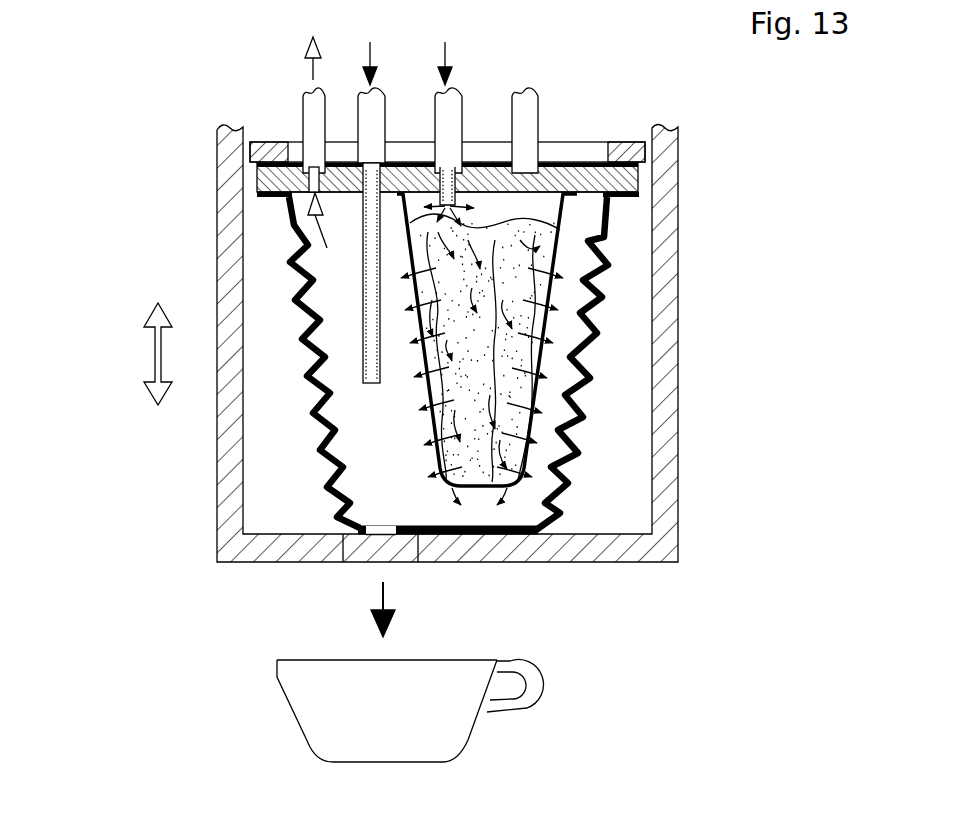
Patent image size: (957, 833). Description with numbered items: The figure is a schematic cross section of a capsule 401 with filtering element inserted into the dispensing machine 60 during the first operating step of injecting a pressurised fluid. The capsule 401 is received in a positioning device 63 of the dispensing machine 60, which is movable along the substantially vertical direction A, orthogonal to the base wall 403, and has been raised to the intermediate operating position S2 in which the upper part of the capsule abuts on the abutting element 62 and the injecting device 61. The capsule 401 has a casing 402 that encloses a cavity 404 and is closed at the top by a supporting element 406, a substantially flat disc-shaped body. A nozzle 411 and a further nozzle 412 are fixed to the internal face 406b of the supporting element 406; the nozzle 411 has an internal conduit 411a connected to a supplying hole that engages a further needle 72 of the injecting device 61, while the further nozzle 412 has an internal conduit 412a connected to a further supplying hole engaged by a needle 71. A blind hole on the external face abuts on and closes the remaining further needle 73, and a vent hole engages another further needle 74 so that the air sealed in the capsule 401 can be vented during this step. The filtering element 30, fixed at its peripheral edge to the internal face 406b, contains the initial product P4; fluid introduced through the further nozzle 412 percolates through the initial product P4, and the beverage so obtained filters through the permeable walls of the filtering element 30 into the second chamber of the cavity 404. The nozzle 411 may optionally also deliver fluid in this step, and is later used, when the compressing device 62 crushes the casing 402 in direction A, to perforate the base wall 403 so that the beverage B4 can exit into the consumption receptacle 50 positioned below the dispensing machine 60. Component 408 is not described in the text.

The capsule 401 is at (186, 78).
The another further needle 74 is at (313, 118).
The further needle 72 is at (373, 125).
The needle 71 is at (450, 127).
The remaining further needle 73 is at (523, 128).
The injecting device 61 is at (592, 107).
The upper plate 408 is at (577, 158).
The compressing device 62 is at (647, 164).
The supporting element 406 is at (620, 183).
The internal face of supporting element 406b is at (347, 194).
The further nozzle 412 is at (440, 190).
The internal conduit of further nozzle 412a is at (460, 198).
The internal conduit of nozzle 411a is at (380, 278).
The nozzle 411 is at (358, 368).
The casing 402 is at (598, 416).
The base wall 403 is at (527, 534).
The cavity 404 is at (533, 403).
The filtering element 30 is at (533, 388).
The initial product P4 is at (527, 348).
The direction A is at (155, 353).
The positioning device 63 is at (217, 536).
The dispensing machine 60 is at (202, 615).
The intermediate operating position S2 is at (681, 607).
The beverage B4 is at (412, 612).
The consumption receptacle 50 is at (457, 725).